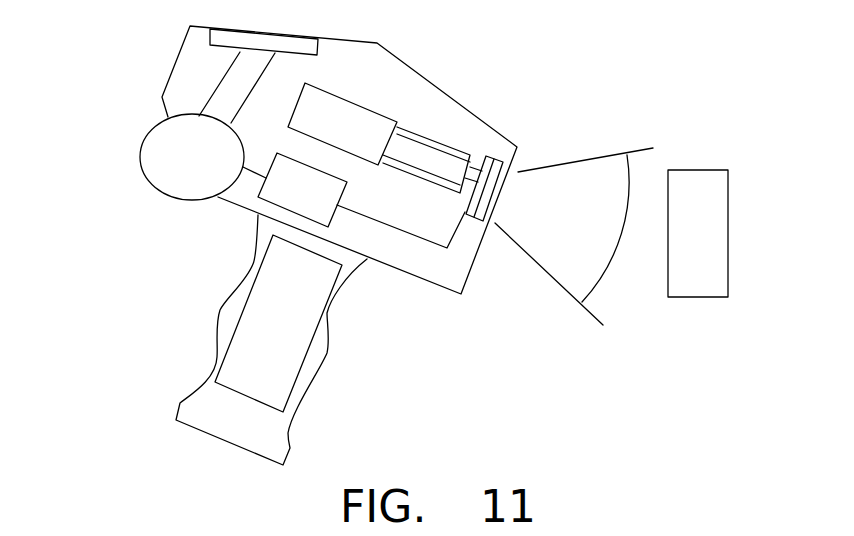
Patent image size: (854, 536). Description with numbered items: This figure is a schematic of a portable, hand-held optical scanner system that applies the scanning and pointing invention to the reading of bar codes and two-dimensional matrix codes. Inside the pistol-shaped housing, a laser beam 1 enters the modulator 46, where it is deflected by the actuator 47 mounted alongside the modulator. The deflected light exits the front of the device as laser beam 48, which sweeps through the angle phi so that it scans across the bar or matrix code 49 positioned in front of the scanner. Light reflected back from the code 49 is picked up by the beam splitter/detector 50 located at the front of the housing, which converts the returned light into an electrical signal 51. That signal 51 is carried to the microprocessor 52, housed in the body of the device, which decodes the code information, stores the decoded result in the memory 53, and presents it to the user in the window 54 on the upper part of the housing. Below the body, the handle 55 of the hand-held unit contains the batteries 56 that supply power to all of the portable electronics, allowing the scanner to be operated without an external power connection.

The laser beam 1 is at (334, 131).
The modulator 46 is at (423, 155).
The actuator 47 is at (455, 143).
The laser beam 48 is at (612, 150).
The bar or 2-D code 49 is at (698, 233).
The beam splitter/detector 50 is at (480, 208).
The electrical signal 51 is at (460, 294).
The microprocessor 52 is at (278, 195).
The memory 53 is at (157, 127).
The window 54 is at (223, 40).
The handle 55 is at (337, 313).
The batteries 56 is at (285, 293).